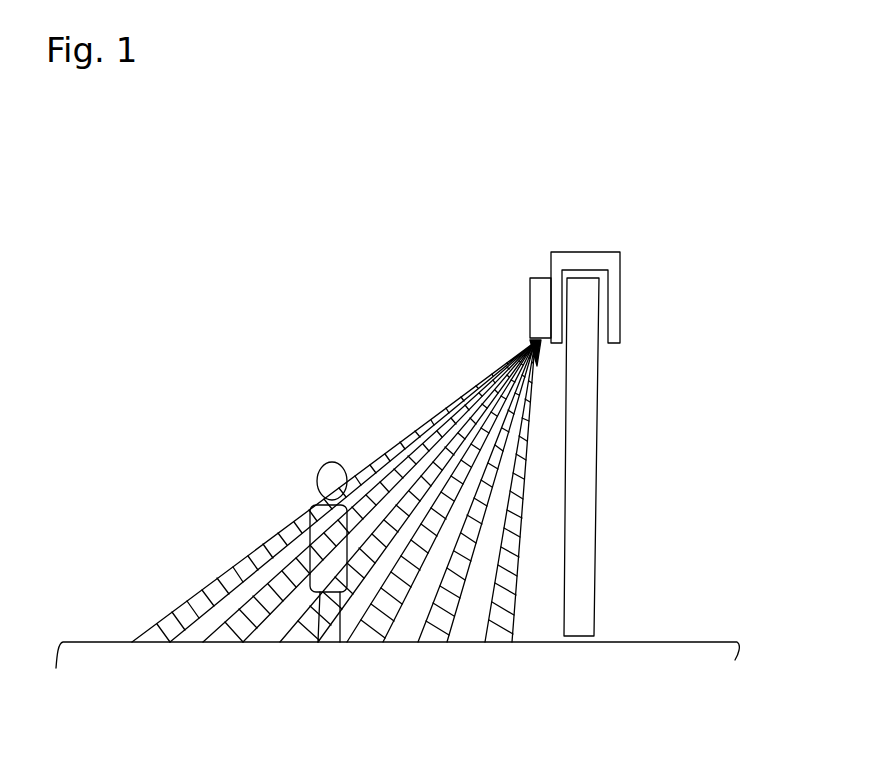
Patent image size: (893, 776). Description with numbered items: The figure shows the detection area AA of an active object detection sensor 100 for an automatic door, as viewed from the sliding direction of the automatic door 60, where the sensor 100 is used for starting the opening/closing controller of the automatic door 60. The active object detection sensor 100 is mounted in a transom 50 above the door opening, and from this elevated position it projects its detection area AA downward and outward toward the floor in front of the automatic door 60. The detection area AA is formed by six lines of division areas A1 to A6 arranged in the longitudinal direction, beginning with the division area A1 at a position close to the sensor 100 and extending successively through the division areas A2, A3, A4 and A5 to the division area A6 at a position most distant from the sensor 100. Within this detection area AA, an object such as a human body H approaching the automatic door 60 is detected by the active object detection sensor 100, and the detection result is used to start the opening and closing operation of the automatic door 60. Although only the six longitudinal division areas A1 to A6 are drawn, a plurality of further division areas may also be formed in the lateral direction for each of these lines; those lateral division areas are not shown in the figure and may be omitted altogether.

The transom 50 is at (607, 262).
The automatic door 60 is at (582, 505).
The active object detection sensor 100 is at (530, 323).
The human body H is at (310, 515).
The detection area AA is at (571, 715).
The division area A1 is at (497, 645).
The division area A2 is at (440, 645).
The division area A3 is at (372, 645).
The division area A4 is at (292, 645).
The division area A5 is at (228, 645).
The division area A6 is at (149, 645).